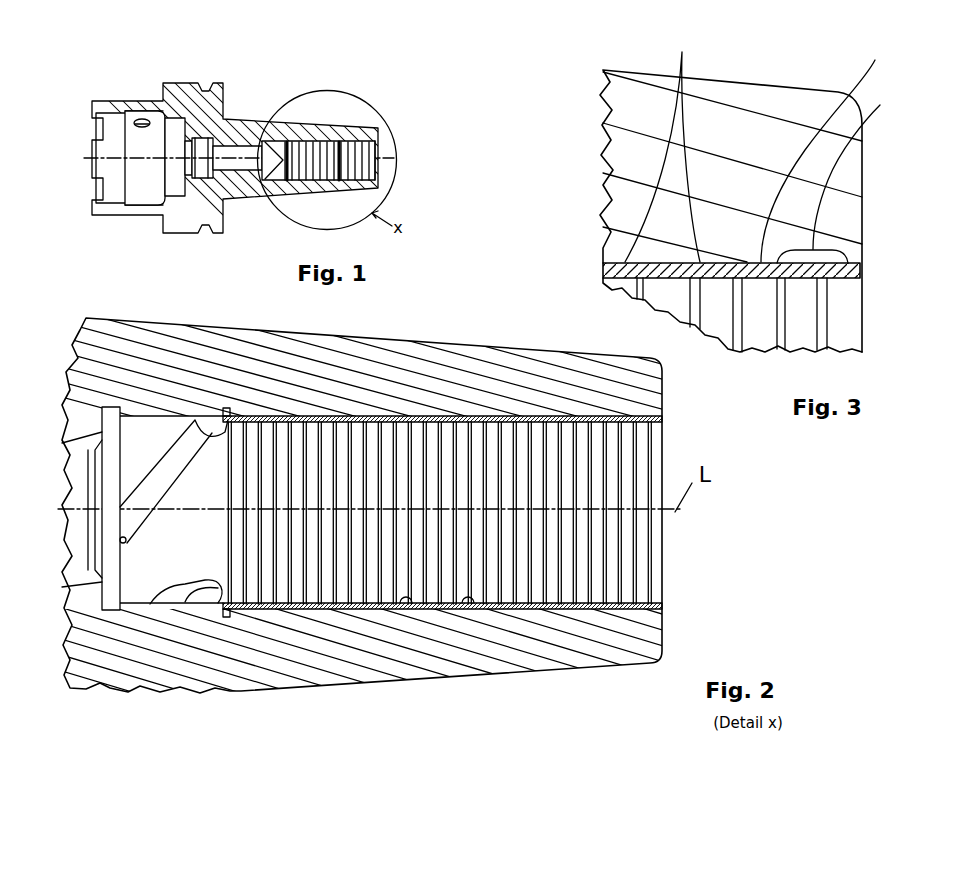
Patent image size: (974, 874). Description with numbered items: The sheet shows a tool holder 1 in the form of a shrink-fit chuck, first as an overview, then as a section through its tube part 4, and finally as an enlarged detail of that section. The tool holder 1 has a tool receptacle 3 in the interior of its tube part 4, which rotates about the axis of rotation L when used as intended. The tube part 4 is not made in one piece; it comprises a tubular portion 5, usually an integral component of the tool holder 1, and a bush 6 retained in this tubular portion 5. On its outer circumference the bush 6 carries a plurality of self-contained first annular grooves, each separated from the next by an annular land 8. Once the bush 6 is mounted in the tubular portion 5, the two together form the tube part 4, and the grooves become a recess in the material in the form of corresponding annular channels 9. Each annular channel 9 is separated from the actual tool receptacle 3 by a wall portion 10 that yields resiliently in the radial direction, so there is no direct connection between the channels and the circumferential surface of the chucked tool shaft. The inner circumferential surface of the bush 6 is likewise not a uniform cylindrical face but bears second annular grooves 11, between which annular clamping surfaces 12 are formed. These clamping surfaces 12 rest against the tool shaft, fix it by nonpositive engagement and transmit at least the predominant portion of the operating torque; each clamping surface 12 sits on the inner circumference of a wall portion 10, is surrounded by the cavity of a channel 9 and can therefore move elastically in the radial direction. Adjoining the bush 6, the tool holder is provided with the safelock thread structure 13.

In FIG. 1, the tool holder 1 is at (260, 97).
In FIG. 2, the tool receptacle 3 is at (651, 553).
In FIG. 3, the tool receptacle 3 is at (851, 336).
In FIG. 1, the tube part 4 is at (290, 124).
In FIG. 3, the tube part 4 is at (873, 268).
In FIG. 1, the tubular portion 5 is at (358, 132).
In FIG. 2, the tubular portion 5 is at (436, 366).
In FIG. 3, the tubular portion 5 is at (850, 172).
In FIG. 1, the bush 6 is at (337, 140).
In FIG. 2, the bush 6 is at (655, 422).
In FIG. 3, the bush 6 is at (838, 272).
In FIG. 2, the annular land 8 is at (476, 418).
In FIG. 3, the annular land 8 is at (825, 150).
In FIG. 2, the annular channels 9 is at (586, 418).
In FIG. 3, the annular channels 9 is at (662, 141).
In FIG. 2, the wall portion 10 is at (460, 418).
In FIG. 3, the wall portion 10 is at (842, 169).
In FIG. 2, the second annular grooves 11 is at (400, 605).
In FIG. 2, the clamping surfaces 12 is at (401, 449).
In FIG. 2, the safelock thread structure 13 is at (193, 592).